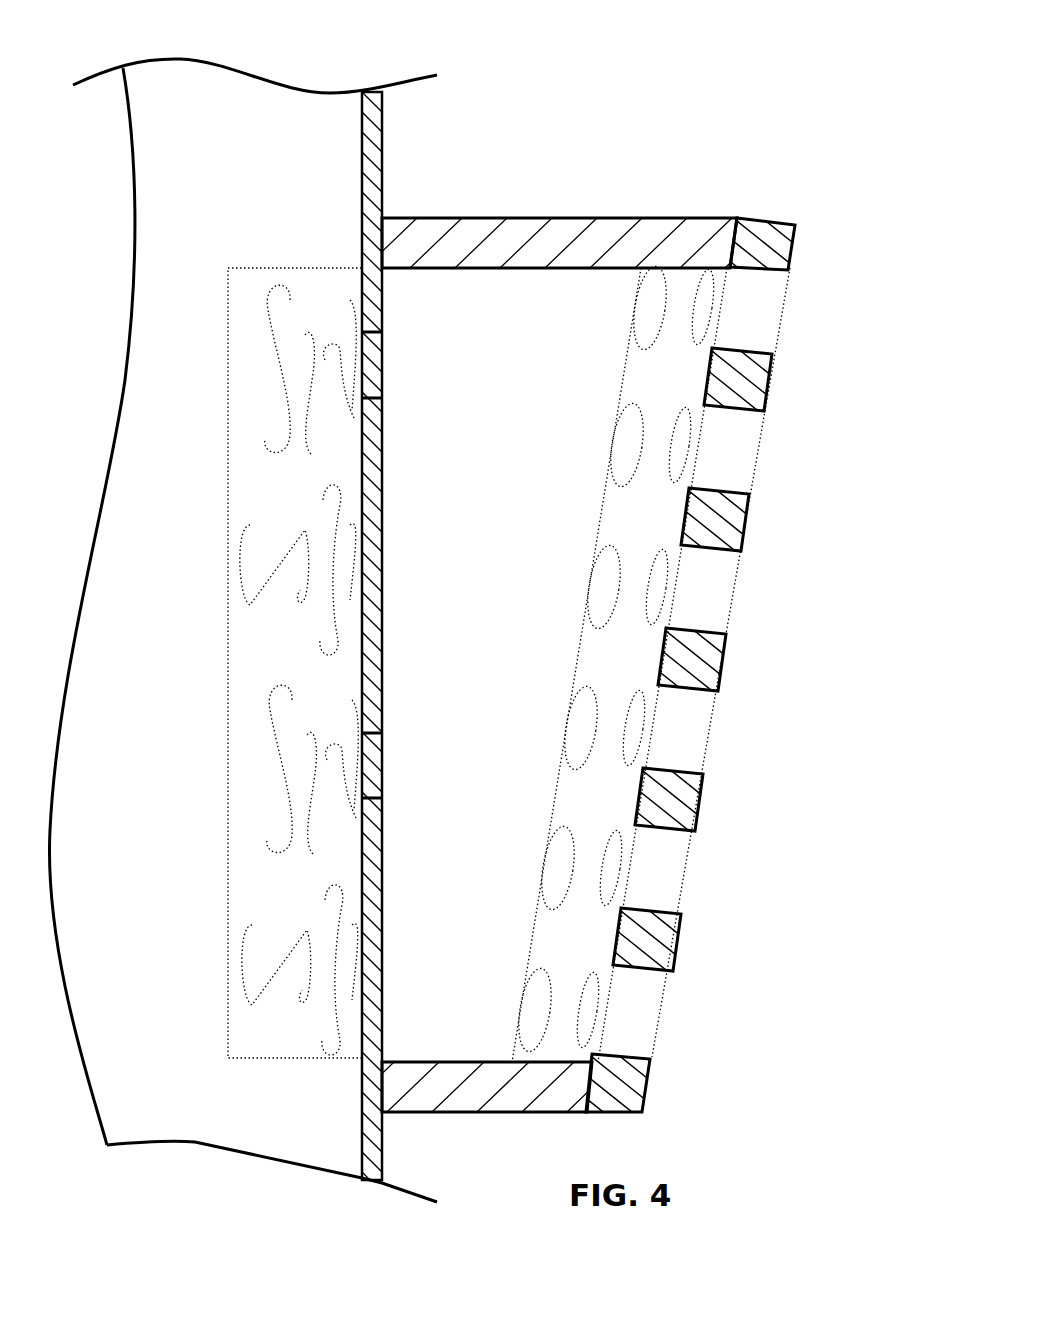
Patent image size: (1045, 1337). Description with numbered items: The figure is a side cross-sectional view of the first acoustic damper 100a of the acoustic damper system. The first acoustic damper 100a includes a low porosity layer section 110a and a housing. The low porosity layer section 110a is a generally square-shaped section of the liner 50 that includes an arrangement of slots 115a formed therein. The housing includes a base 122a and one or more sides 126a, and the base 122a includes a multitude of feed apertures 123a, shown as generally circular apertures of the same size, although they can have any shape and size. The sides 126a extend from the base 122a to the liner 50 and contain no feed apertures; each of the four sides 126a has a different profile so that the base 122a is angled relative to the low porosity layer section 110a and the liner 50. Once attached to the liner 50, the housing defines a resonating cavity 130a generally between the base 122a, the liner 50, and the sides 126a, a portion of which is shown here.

The liner 50 is at (382, 1172).
The first acoustic damper 100a is at (828, 181).
The low porosity layer section 110a is at (300, 268).
The slots 115a is at (265, 283).
The base 122a is at (745, 525).
The feed apertures 123a is at (770, 313).
The sides 126a is at (607, 232).
The cavity 130a is at (498, 1006).